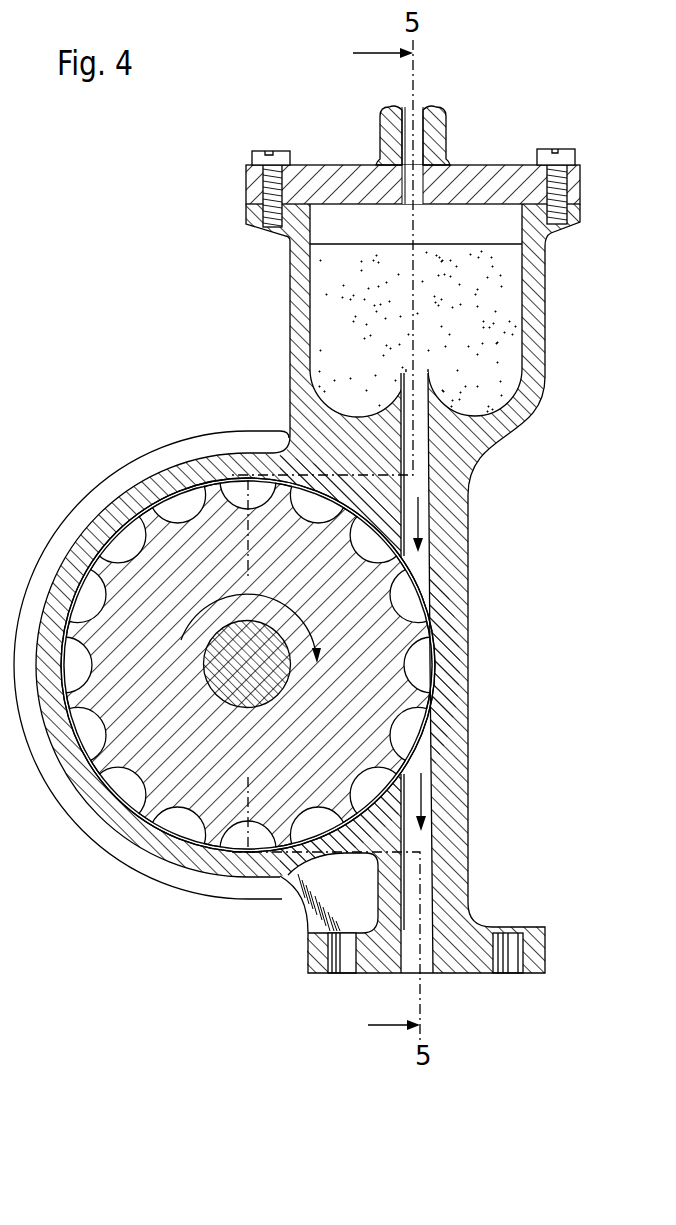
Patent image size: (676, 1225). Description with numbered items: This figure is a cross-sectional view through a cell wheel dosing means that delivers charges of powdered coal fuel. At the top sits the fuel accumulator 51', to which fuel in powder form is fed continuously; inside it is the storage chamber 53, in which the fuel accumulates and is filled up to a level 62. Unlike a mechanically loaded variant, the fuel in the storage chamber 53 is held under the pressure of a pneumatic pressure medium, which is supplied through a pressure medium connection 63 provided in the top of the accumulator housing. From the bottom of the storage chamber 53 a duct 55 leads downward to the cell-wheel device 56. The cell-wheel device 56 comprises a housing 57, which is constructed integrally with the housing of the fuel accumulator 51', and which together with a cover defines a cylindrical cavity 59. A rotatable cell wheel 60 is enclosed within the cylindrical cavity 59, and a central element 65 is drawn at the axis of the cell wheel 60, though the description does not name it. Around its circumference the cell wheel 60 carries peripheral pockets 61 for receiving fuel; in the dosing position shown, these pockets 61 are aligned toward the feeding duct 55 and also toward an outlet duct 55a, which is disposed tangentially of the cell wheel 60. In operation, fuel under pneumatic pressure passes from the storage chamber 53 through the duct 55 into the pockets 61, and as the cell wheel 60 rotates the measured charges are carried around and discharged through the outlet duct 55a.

The fuel accumulator 51' is at (413, 158).
The storage chamber 53 is at (416, 310).
The duct 55 is at (424, 558).
The outlet duct 55a is at (428, 790).
The cell-wheel device 56 is at (297, 588).
The housing 57 is at (478, 464).
The cylindrical cavity 59 is at (163, 827).
The cell wheel 60 is at (248, 665).
The peripheral pockets 61 is at (160, 507).
The level 62 is at (389, 243).
The pressure medium connection 63 is at (440, 114).
The rotor shaft bore 65 is at (274, 694).